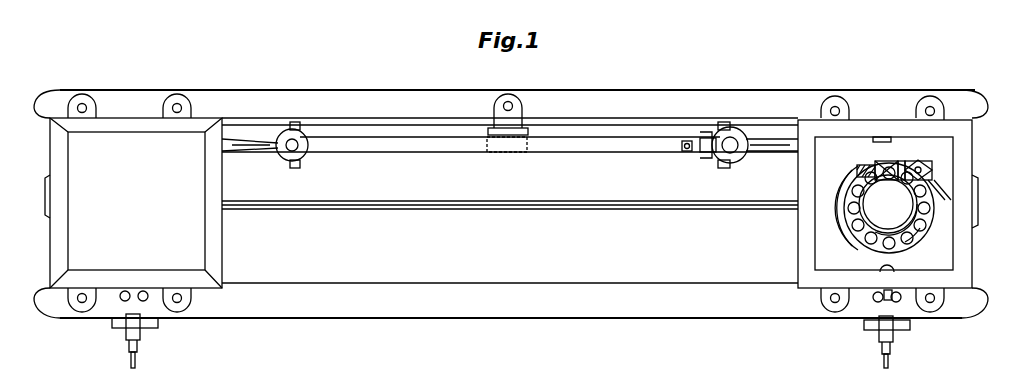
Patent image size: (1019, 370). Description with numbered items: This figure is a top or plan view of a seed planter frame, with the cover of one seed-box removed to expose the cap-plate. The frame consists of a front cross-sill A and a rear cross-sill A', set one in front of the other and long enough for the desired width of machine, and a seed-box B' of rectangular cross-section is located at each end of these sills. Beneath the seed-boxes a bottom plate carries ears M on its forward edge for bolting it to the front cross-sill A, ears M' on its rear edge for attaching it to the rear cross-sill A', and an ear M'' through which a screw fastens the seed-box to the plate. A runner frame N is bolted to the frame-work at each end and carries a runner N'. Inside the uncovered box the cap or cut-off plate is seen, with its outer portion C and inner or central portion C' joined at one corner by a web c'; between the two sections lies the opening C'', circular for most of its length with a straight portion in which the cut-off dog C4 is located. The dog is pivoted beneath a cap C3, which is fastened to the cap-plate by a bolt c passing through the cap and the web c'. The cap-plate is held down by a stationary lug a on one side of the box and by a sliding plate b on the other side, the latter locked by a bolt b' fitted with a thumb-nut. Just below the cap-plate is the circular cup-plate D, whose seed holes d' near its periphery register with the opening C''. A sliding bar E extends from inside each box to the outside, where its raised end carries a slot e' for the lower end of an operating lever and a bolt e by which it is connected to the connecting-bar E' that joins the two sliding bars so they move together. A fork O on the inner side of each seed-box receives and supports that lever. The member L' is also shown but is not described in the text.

The front cross-sill A is at (511, 204).
The rear cross-sill A' is at (520, 123).
The seed-box B' is at (511, 203).
The outer portion of cap or cut-off plate C is at (882, 198).
The inner or central portion of cap-plate C' is at (888, 204).
The opening in cap-plate C'' is at (923, 245).
The cap C3 is at (897, 161).
The cut-off dog C4 is at (863, 159).
The bolt c is at (925, 163).
The web c' is at (942, 178).
The cup-plate D is at (878, 217).
The seed holes d' is at (908, 237).
The sliding bar E is at (510, 131).
The connecting-bar E' is at (510, 153).
The bolt e is at (489, 163).
The slot e' is at (719, 129).
The bar L' is at (510, 219).
The ears M is at (506, 302).
The ears M' is at (506, 106).
The ear M'' is at (514, 201).
The runner frames or supports N is at (507, 338).
The runner N' is at (520, 355).
The fork O is at (775, 114).
The stationary lug a is at (885, 131).
The sliding plate b is at (513, 288).
The bolt b' is at (879, 305).